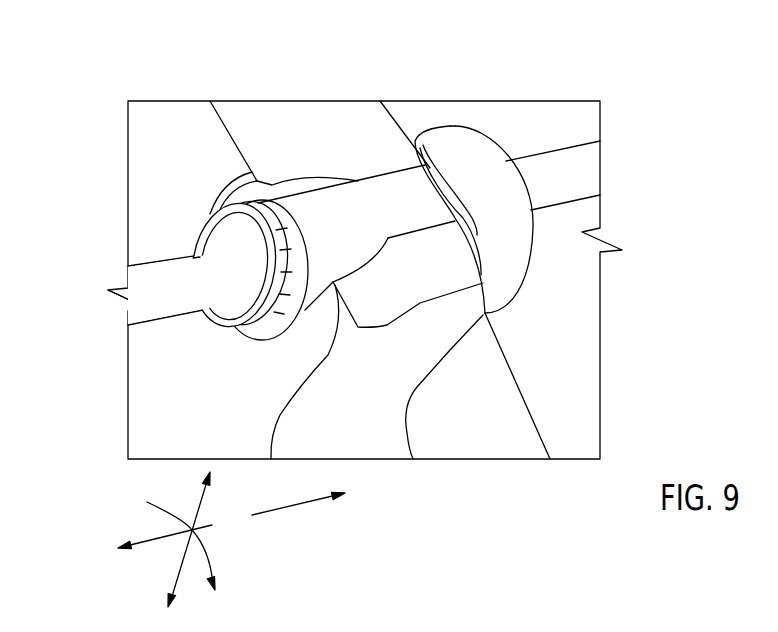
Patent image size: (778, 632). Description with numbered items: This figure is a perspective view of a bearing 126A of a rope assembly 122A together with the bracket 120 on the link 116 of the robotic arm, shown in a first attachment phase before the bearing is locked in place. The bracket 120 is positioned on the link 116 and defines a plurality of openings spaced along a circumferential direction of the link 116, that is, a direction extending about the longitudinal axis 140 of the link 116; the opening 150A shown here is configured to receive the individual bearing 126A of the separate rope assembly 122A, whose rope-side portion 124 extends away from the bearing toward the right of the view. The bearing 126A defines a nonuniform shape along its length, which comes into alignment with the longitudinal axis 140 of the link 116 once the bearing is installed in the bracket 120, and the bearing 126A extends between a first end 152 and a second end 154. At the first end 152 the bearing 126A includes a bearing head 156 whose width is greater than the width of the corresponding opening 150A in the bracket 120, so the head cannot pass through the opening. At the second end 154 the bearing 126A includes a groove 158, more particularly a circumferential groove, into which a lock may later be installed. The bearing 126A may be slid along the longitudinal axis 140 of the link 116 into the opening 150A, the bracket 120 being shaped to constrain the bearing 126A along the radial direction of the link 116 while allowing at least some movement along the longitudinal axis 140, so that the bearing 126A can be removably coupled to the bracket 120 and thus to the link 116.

The link 116 is at (153, 437).
The bracket 120 is at (335, 125).
The rope assembly 122A is at (583, 105).
The shaft 124 is at (583, 170).
The bearing 126A is at (393, 192).
The longitudinal axis 140 is at (231, 537).
The opening 150A is at (361, 240).
The first end 152 is at (480, 157).
The second end 154 is at (272, 322).
The bearing head 156 is at (524, 259).
The groove 158 is at (271, 230).